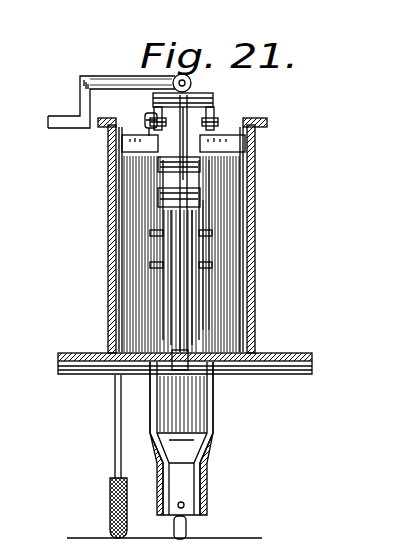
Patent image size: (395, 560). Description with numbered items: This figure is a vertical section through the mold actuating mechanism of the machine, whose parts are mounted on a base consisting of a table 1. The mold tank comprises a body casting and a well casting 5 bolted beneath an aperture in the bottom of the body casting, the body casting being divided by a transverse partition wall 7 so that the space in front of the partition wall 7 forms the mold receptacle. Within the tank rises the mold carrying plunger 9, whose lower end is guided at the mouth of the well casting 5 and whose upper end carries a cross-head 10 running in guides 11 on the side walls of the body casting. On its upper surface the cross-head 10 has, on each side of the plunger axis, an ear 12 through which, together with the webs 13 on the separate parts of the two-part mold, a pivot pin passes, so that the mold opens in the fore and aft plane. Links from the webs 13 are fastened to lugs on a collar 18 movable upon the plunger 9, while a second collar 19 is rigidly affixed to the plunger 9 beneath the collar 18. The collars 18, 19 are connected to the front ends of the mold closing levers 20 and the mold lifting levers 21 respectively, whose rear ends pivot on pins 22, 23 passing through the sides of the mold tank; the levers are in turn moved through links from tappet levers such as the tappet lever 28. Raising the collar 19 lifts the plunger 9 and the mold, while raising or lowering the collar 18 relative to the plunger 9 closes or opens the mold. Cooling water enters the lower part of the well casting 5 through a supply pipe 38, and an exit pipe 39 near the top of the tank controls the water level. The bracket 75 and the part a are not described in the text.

The table 1 is at (285, 355).
The well casting 5 is at (208, 408).
The transverse partition wall 7 is at (228, 312).
The mold carrying plunger 9 is at (182, 247).
The cross-head 10 is at (218, 160).
The guides 11 is at (245, 143).
The ear 12 is at (216, 118).
The webs 13 is at (150, 112).
The collar 18 is at (205, 168).
The second collar 19 is at (207, 232).
The mold closing levers 20 is at (163, 182).
The mold lifting levers 21 is at (210, 246).
The pins 22 is at (152, 232).
The pins 23 is at (152, 265).
The tappet lever 28 is at (80, 100).
The supply pipe 38 is at (190, 530).
The exit pipe 39 is at (115, 418).
The bracket 75 is at (190, 112).
The part a is at (234, 171).